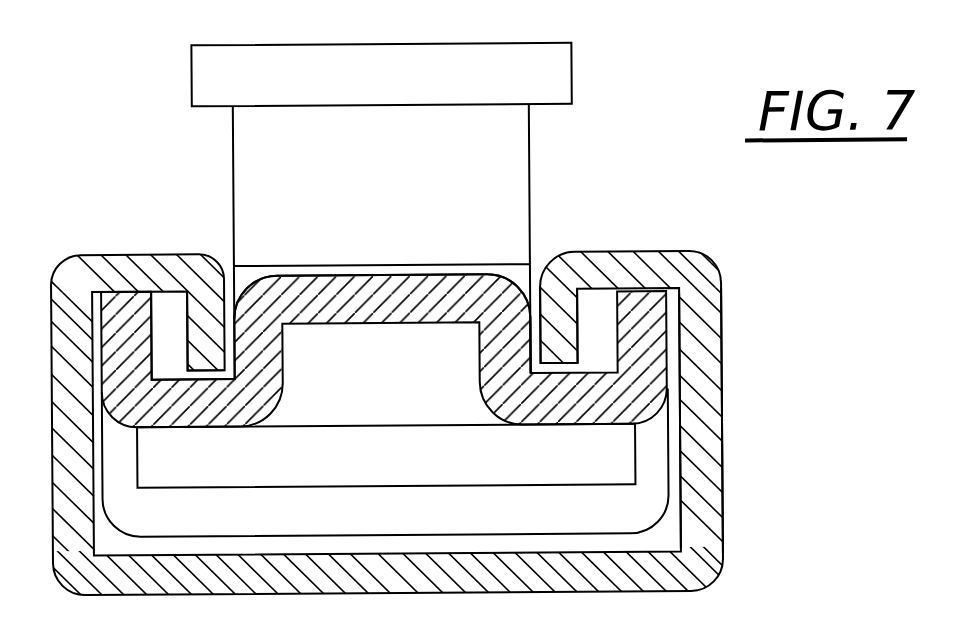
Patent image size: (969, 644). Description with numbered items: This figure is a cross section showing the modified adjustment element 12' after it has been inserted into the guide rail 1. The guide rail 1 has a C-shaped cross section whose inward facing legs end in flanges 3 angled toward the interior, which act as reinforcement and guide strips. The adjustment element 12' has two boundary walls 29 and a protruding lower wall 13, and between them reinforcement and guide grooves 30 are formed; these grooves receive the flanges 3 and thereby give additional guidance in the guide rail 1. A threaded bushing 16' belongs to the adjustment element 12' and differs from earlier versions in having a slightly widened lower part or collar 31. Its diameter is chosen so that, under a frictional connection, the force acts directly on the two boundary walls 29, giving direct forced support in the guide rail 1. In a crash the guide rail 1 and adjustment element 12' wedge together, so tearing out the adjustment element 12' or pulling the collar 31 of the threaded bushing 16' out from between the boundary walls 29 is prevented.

The guide rail 1 is at (722, 429).
The flange 3 is at (563, 327).
The adjustment element 12' is at (724, 420).
The protruding lower wall 13 is at (450, 278).
The threaded bushing 16' is at (412, 210).
The boundary walls 29 is at (650, 322).
The reinforcement and guide grooves 30 is at (170, 321).
The lower part or collar 31 is at (613, 462).